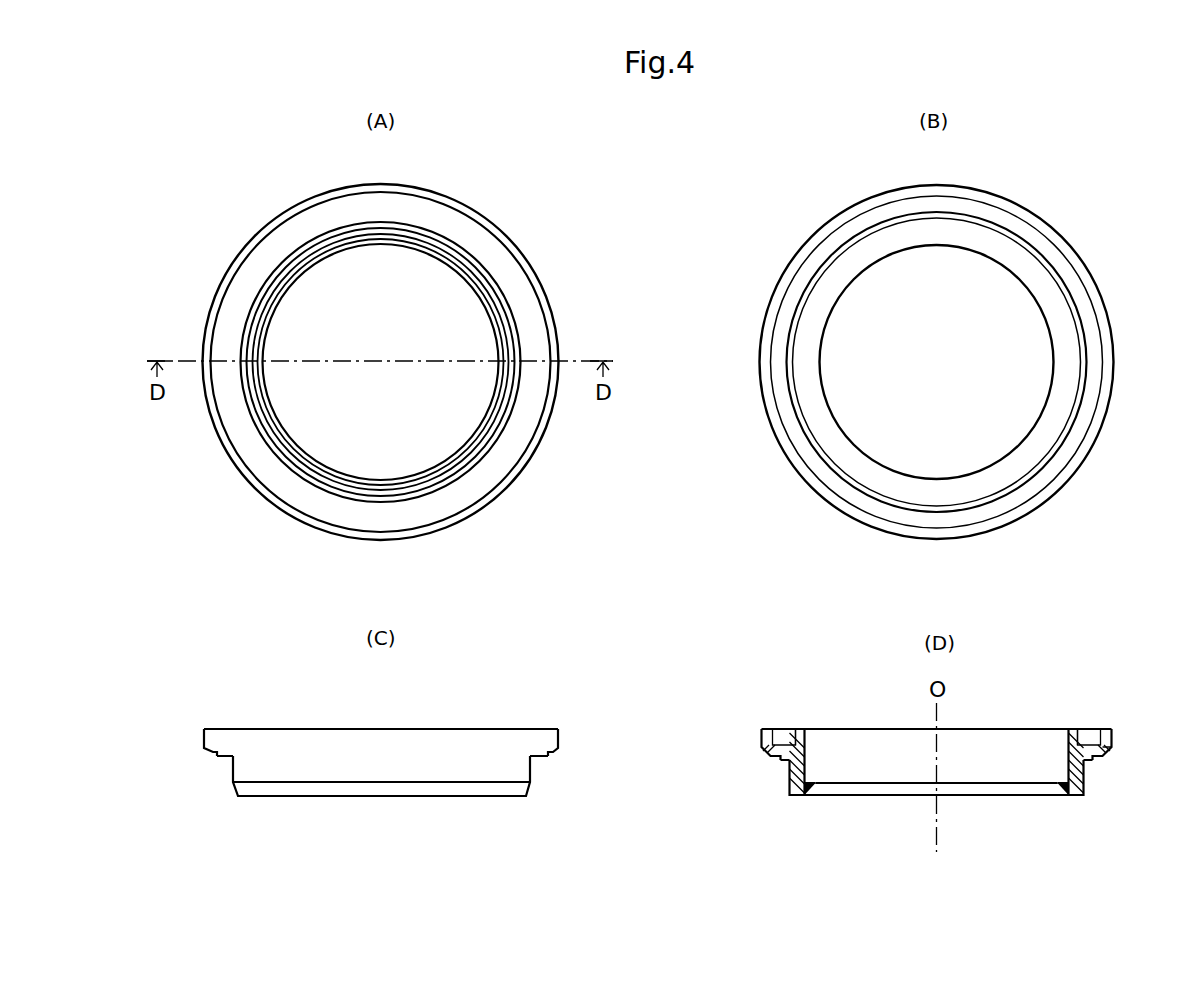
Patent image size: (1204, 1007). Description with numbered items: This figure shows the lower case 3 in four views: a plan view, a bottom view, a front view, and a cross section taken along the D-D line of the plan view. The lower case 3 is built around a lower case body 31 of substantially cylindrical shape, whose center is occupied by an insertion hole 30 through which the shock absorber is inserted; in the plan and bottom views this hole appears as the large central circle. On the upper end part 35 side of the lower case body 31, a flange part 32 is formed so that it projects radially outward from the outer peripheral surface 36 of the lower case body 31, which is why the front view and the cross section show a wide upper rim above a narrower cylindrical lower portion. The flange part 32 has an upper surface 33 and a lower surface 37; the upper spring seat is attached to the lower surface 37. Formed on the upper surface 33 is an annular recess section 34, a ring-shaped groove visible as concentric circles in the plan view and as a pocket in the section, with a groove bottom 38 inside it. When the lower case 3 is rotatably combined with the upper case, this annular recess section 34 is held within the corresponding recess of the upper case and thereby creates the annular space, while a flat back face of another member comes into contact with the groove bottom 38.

The lower case 3 is at (608, 145).
The insertion hole 30 is at (313, 289).
The lower case body 31 is at (516, 241).
The flange part 32 is at (546, 290).
The upper surface 33 is at (268, 729).
The annular recess section 34 is at (452, 216).
The upper end part 35 is at (1128, 729).
The outer peripheral surface 36 is at (1088, 346).
The lower surface 37 is at (776, 757).
The groove bottom 38 is at (795, 729).